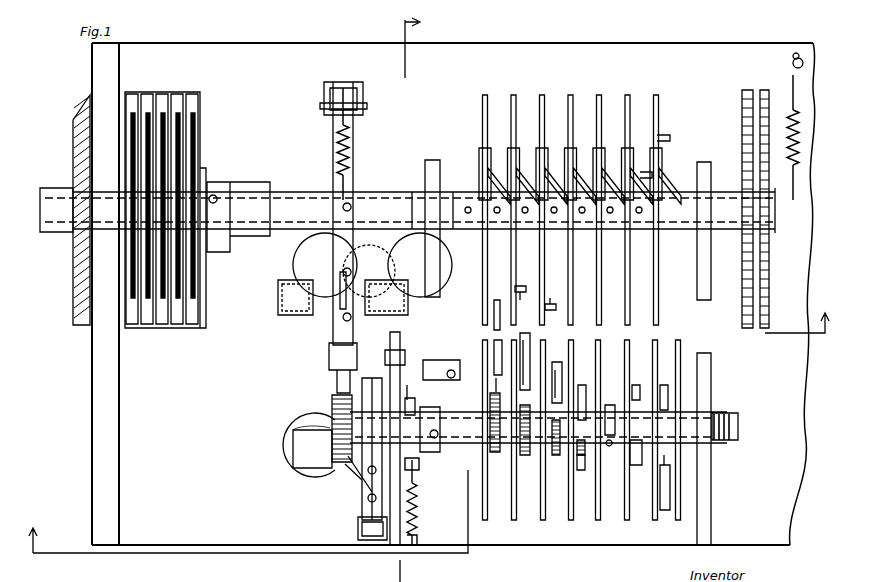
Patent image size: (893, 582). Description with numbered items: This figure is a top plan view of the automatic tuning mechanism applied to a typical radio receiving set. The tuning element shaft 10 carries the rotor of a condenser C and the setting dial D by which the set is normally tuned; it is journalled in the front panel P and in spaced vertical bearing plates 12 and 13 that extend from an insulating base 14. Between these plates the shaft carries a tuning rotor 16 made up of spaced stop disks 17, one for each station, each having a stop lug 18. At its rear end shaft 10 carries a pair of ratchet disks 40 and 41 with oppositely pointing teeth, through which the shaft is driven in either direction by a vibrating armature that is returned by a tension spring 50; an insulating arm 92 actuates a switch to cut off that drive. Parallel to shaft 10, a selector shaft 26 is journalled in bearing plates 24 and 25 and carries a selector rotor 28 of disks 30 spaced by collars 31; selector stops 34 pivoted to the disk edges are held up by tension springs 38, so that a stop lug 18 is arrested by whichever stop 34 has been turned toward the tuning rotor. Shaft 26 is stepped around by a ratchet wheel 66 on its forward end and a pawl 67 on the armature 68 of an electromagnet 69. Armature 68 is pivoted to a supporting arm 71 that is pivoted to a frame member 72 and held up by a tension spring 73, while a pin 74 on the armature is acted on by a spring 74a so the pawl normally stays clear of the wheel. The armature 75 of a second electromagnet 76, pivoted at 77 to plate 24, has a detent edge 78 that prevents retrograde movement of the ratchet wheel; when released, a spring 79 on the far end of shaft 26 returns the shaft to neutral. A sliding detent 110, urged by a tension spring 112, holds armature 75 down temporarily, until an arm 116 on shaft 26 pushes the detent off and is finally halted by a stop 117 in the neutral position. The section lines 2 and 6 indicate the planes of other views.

The front panel P is at (92, 376).
The setting dial D is at (74, 258).
The condenser C is at (152, 94).
The insulating base 14 is at (294, 527).
The section line 2- 2 is at (428, 447).
The section line 6- 6 is at (406, 46).
The tuning element shaft 10 is at (296, 205).
The insulating arm 92 is at (218, 252).
The bearing plate 12 is at (432, 162).
The bearing plate 13 is at (705, 163).
The tuning rotor 16 is at (561, 92).
The stop disks 17 is at (600, 95).
The stop lug 18 is at (505, 312).
The ratchet disk 40 is at (742, 95).
The ratchet disk 41 is at (770, 92).
The tension spring 50 is at (796, 120).
The frame member 72 is at (358, 85).
The tension spring 73 is at (350, 145).
The supporting arm 71 is at (356, 185).
The armature 68 is at (325, 275).
The pin 74 is at (350, 265).
The spring 74a is at (338, 313).
The electromagnet 69 is at (283, 325).
The pawl 67 is at (335, 380).
The ratchet wheel 66 is at (333, 402).
The detent edge 78 is at (330, 424).
The armature 75 is at (312, 449).
The electromagnet 76 is at (283, 456).
The pivot 77 is at (358, 530).
The detent 110 is at (385, 380).
The bearing plate 24 is at (401, 362).
The stop 117 is at (443, 360).
The arm 116 is at (442, 415).
The tension spring 112 is at (418, 520).
The selector shaft 26 is at (450, 450).
The spring 79 is at (726, 444).
The selector rotor 28 is at (556, 540).
The disks 30 is at (627, 521).
The bearing plate 25 is at (711, 372).
The tension springs 38 is at (496, 455).
The selector stops 34 is at (554, 362).
The collars 31 is at (612, 460).